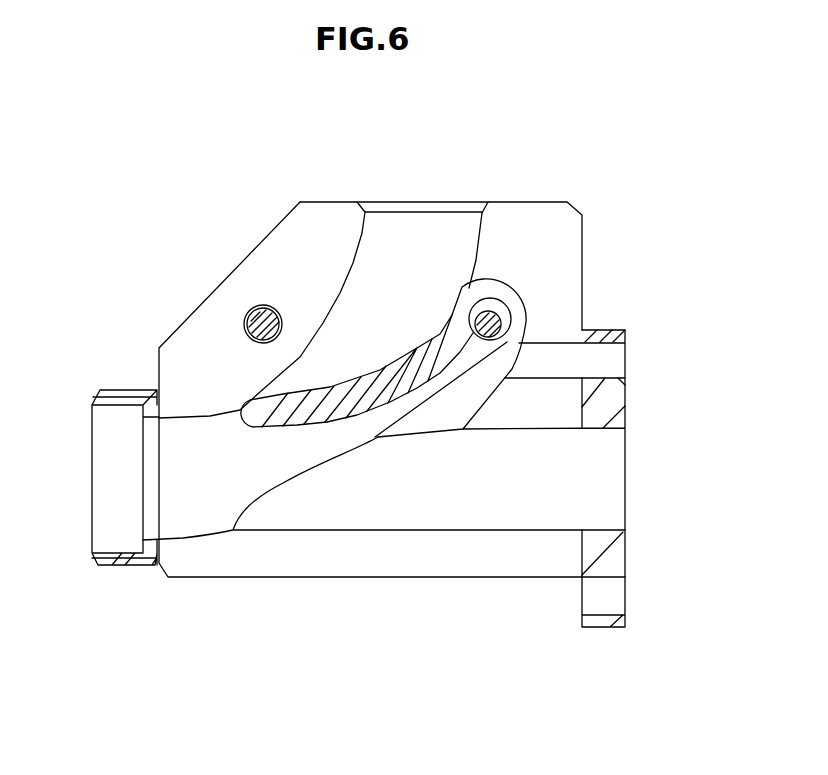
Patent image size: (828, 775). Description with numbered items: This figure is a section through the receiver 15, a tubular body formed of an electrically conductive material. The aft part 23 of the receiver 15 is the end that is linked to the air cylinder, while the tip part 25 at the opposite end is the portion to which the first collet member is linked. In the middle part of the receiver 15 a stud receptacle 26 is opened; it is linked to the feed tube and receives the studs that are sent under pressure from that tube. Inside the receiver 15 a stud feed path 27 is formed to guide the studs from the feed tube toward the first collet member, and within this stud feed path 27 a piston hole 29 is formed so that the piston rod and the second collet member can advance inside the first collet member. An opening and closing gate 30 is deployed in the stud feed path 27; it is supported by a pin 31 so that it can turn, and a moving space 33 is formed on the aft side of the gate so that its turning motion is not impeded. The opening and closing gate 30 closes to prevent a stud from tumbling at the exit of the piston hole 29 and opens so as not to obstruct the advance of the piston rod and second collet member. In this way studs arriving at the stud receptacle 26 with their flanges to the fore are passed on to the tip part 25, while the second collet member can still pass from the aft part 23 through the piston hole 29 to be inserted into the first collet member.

The receiver 15 is at (541, 173).
The aft part 23 is at (613, 562).
The tip part 25 is at (120, 566).
The stud receptacle 26 is at (457, 211).
The stud feed path 27 is at (418, 303).
The piston hole 29 is at (448, 520).
The opening and closing gate 30 is at (265, 418).
The pin 31 is at (503, 308).
The moving space 33 is at (455, 411).